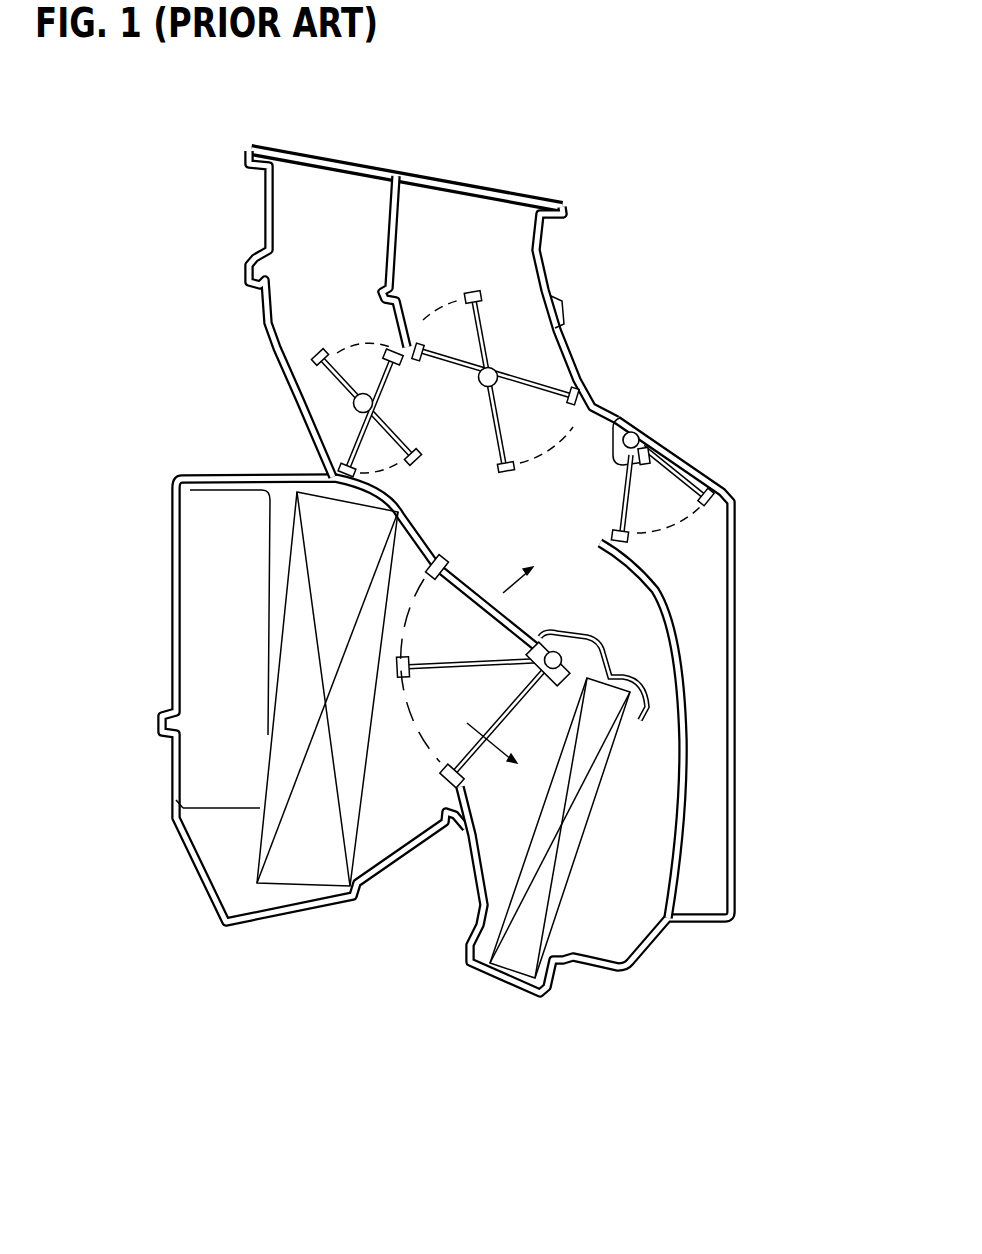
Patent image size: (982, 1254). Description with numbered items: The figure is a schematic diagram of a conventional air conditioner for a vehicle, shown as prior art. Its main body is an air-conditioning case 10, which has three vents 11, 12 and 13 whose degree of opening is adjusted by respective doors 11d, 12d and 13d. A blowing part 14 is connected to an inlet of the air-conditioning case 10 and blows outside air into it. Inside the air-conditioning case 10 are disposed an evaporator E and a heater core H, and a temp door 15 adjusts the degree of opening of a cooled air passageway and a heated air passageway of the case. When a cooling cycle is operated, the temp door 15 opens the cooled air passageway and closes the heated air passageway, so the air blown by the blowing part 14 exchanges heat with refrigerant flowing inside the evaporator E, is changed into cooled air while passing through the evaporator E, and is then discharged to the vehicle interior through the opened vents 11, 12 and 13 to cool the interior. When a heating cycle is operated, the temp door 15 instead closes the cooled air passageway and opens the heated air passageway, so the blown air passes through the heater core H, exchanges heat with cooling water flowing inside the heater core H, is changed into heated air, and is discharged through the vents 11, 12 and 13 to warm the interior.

The air-conditioning case 10 is at (187, 481).
The vent 11 is at (322, 213).
The vent 12 is at (457, 240).
The vent 13 is at (718, 750).
The door 11d is at (313, 363).
The door 12d is at (577, 385).
The door 13d is at (717, 487).
The blowing part 14 is at (197, 607).
The temp door 15 is at (600, 588).
The evaporator E is at (310, 895).
The heater core H is at (517, 957).